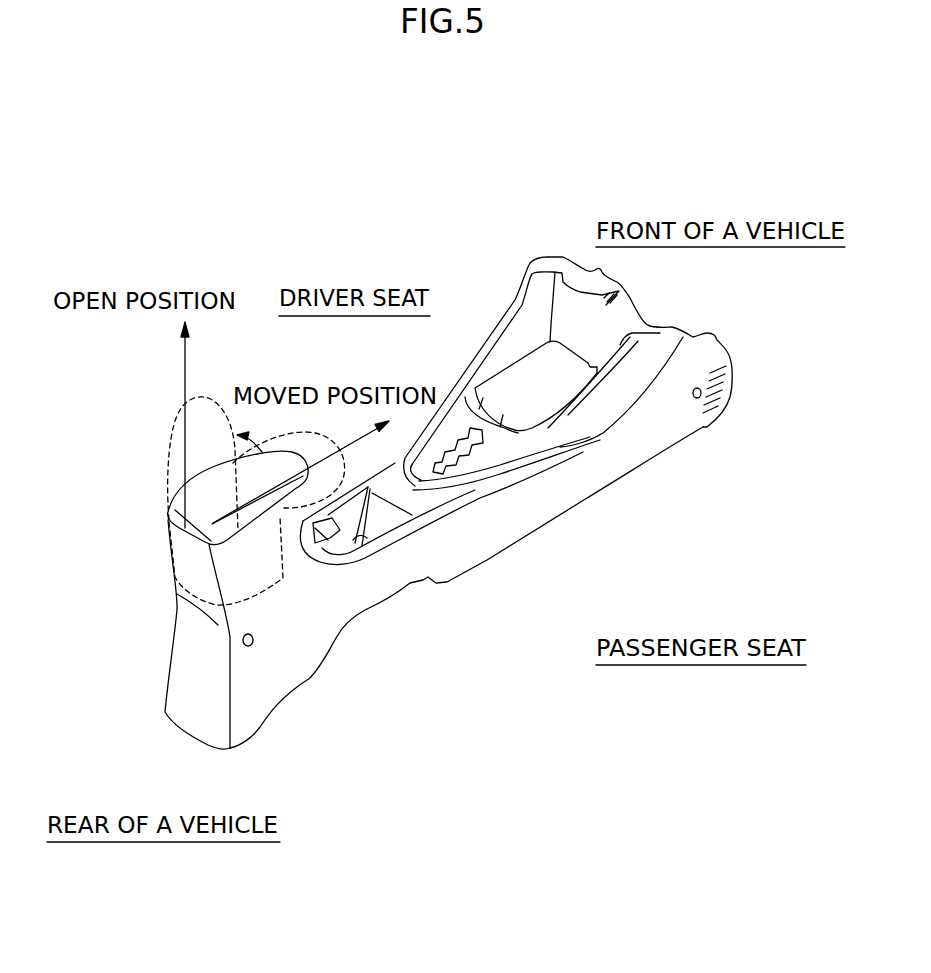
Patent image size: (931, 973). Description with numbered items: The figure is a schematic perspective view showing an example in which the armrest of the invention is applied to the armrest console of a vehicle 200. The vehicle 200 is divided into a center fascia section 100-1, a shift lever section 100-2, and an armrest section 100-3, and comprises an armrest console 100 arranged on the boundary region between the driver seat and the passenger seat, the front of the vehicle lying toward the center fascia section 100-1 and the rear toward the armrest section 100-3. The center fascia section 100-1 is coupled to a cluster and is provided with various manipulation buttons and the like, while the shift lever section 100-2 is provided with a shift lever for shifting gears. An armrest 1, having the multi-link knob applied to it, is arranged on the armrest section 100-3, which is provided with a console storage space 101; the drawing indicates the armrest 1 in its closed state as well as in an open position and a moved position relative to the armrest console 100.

The vehicle 200 is at (533, 159).
The armrest console 100 is at (477, 318).
The armrest 1 is at (205, 505).
The console storage space 101 is at (173, 558).
The center fascia section 100-1 is at (628, 388).
The shift lever section 100-2 is at (493, 457).
The armrest section 100-3 is at (268, 638).